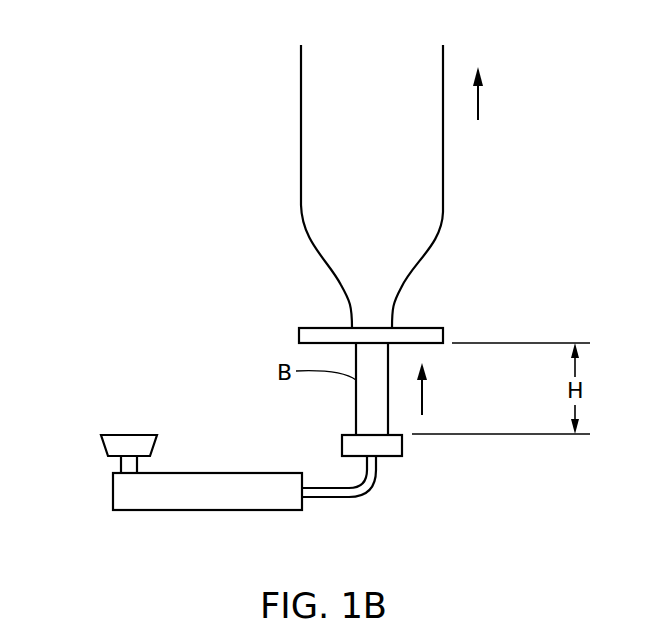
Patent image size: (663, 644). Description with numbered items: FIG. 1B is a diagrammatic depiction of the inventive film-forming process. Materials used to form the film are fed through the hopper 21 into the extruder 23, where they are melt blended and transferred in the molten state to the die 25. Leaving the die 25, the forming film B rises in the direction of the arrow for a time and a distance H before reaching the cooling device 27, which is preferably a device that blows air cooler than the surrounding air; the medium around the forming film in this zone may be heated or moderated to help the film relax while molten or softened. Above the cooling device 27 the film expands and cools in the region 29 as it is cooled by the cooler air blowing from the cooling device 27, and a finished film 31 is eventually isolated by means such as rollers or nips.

The hopper 21 is at (112, 435).
The extruder 23 is at (133, 513).
The die 25 is at (403, 447).
The cooling device 27 is at (432, 328).
The region 29 is at (328, 275).
The finished film 31 is at (443, 168).